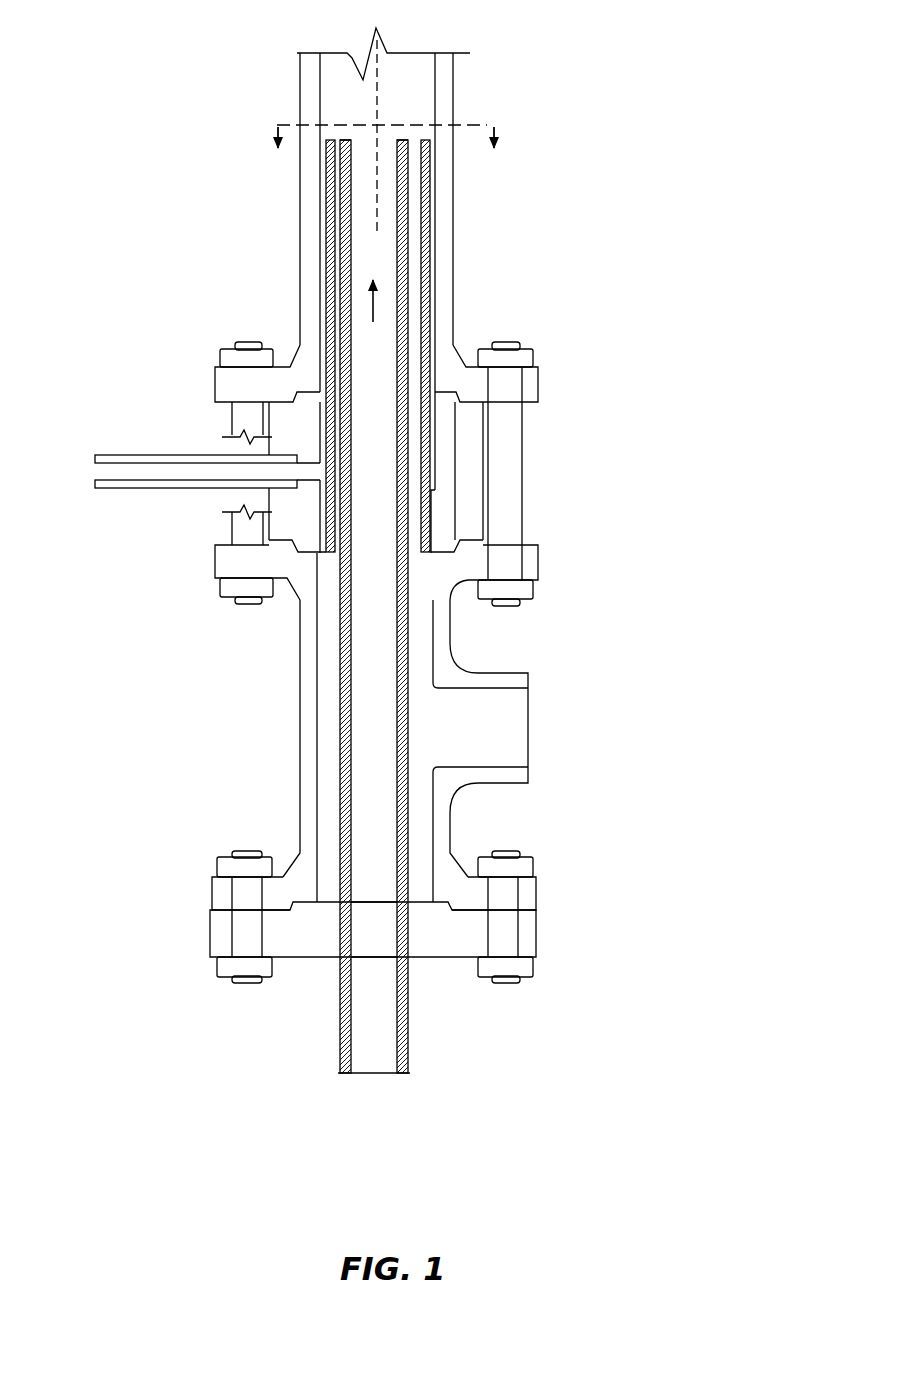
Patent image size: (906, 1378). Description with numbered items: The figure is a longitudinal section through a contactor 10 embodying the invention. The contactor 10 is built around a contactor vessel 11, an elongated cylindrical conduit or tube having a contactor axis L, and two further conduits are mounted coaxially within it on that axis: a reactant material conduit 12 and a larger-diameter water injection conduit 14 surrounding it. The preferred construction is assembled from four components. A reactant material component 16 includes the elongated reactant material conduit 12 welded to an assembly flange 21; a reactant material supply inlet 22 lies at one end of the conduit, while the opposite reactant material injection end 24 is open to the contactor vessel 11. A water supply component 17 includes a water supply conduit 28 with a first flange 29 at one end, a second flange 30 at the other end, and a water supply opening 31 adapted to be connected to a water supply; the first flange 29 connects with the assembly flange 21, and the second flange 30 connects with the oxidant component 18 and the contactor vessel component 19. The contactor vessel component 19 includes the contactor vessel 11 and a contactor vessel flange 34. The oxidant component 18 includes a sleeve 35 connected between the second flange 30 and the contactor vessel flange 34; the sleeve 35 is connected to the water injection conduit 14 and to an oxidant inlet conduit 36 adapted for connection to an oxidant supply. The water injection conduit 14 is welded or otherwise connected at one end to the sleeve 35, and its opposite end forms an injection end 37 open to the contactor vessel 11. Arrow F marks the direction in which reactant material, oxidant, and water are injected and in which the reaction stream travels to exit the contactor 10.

The contactor 10 is at (703, 105).
The contactor vessel 11 is at (455, 216).
The reactant material conduit 12 is at (410, 287).
The water injection conduit 14 is at (431, 250).
The reactant material component 16 is at (527, 1080).
The water supply component 17 is at (156, 712).
The oxidant component 18 is at (152, 560).
The contactor vessel component 19 is at (176, 238).
The assembly flange 21 is at (540, 935).
The reactant material supply inlet 22 is at (360, 1074).
The reactant material injection end 24 is at (405, 140).
The water supply conduit 28 is at (299, 678).
The first flange 29 is at (536, 882).
The second flange 30 is at (540, 552).
The water supply opening 31 is at (530, 676).
The contactor vessel flange 34 is at (540, 373).
The sleeve 35 is at (468, 480).
The oxidant inlet conduit 36 is at (158, 455).
The injection end 37 is at (426, 140).